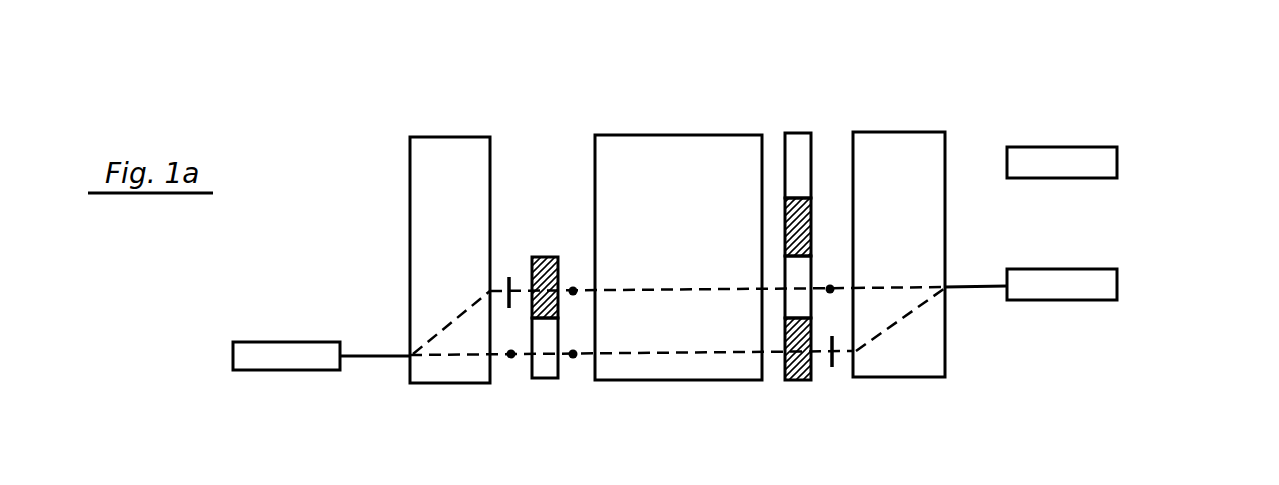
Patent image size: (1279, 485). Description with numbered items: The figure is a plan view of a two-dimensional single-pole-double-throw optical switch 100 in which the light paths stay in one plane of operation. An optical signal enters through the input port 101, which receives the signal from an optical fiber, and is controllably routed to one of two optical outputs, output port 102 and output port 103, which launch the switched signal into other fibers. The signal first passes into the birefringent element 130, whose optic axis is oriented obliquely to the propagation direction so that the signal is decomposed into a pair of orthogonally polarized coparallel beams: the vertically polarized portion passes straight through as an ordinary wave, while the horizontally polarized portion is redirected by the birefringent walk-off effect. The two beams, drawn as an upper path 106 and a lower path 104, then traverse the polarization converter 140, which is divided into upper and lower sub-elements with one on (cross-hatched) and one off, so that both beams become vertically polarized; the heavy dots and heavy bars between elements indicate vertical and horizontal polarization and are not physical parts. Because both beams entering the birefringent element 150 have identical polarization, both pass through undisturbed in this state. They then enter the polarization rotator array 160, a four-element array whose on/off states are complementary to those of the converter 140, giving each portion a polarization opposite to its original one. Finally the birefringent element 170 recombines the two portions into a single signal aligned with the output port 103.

The optical switch 100 is at (983, 121).
The input port 101 is at (273, 342).
The output port 102 is at (1117, 162).
The output port 103 is at (1117, 285).
The lower beam path 104 is at (688, 353).
The upper beam path 106 is at (690, 291).
The birefringent element 130 is at (445, 137).
The polarization converter 140 is at (555, 378).
The birefringent element 150 is at (660, 135).
The polarization rotator array 160 is at (815, 373).
The birefringent element 170 is at (903, 132).